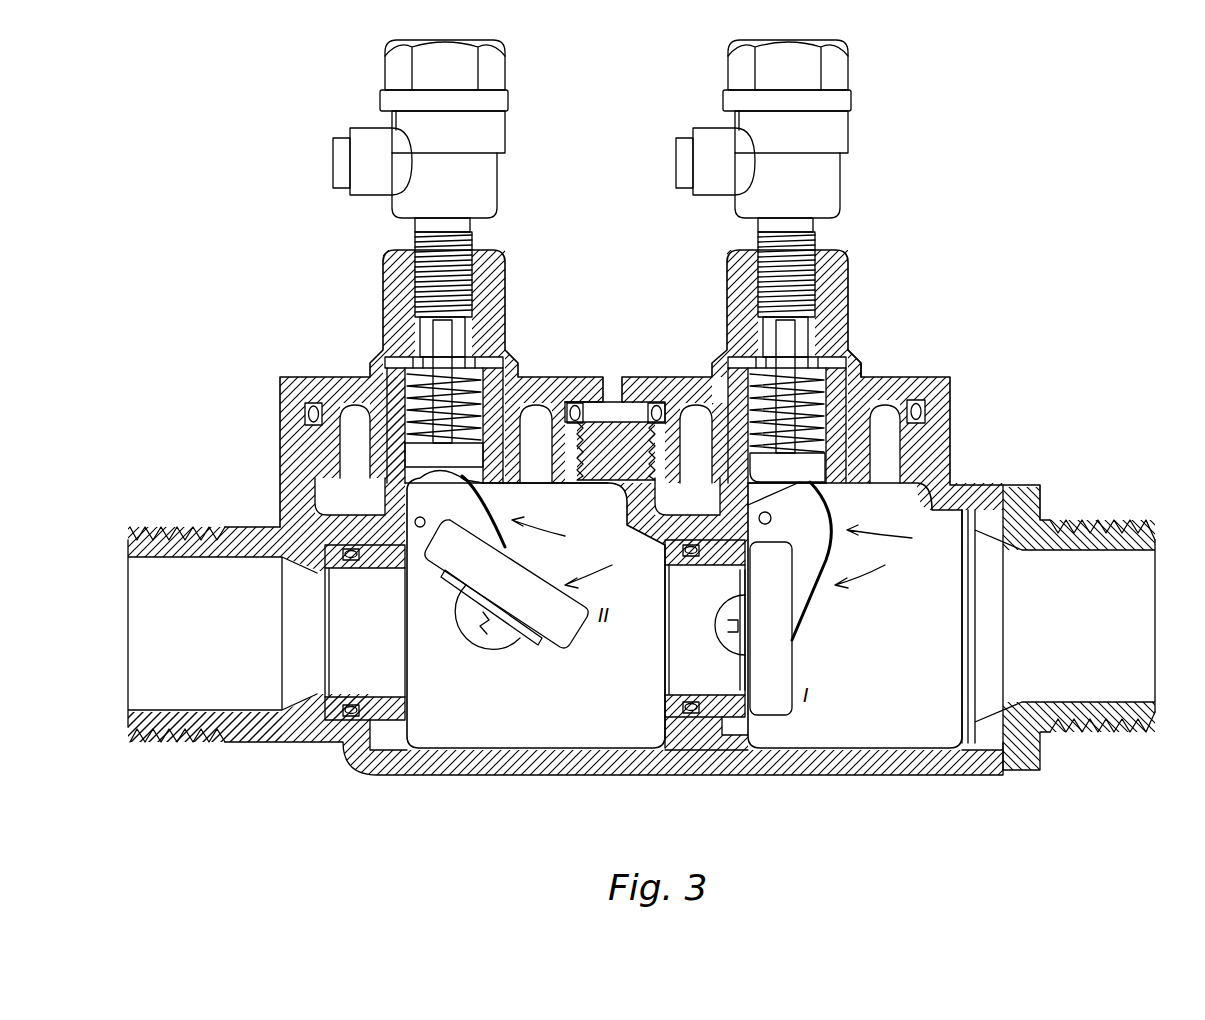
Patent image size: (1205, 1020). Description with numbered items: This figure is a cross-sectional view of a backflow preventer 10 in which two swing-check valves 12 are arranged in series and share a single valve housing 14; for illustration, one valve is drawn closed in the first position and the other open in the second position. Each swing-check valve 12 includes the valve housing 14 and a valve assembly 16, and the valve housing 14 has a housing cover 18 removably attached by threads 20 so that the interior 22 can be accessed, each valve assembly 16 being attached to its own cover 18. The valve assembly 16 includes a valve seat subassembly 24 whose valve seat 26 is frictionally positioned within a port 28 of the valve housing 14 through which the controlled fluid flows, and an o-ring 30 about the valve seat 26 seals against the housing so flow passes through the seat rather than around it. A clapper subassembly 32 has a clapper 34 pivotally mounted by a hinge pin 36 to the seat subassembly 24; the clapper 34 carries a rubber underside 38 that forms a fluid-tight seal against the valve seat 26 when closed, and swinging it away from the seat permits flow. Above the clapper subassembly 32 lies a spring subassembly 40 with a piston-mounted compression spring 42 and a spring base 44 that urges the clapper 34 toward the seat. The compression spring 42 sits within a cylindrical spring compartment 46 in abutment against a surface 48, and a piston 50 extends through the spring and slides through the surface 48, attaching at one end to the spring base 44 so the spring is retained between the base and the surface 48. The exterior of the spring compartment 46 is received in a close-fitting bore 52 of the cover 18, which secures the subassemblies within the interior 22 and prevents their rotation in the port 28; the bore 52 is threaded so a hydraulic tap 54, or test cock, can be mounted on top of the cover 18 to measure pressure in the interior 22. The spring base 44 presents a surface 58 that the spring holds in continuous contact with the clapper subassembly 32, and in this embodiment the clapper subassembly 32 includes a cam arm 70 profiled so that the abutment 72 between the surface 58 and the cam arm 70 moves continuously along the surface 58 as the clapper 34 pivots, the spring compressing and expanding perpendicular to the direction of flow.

The backflow preventer 10 is at (1010, 248).
The swing-check valve 12 is at (530, 262).
The valve housing 14 is at (612, 400).
The valve assembly 16 is at (725, 533).
The housing cover 18 is at (312, 378).
The threads 20 is at (945, 440).
The interior 22 is at (592, 720).
The valve seat subassembly 24 is at (352, 582).
The valve seat 26 is at (368, 755).
The port 28 is at (325, 628).
The o-ring 30 is at (345, 735).
The clapper subassembly 32 is at (735, 566).
The clapper 34 is at (570, 623).
The hinge pin 36 is at (390, 512).
The rubber underside 38 is at (555, 645).
The spring subassembly 40 is at (862, 366).
The compression spring 42 is at (545, 378).
The spring base 44 is at (512, 470).
The spring compartment 46 is at (395, 360).
The surface 48 is at (386, 338).
The piston 50 is at (448, 325).
The bore 52 is at (510, 372).
The hydraulic tap 54 is at (485, 130).
The surface 58 is at (472, 482).
The cam arm 70 is at (500, 540).
The abutment 72 is at (322, 435).